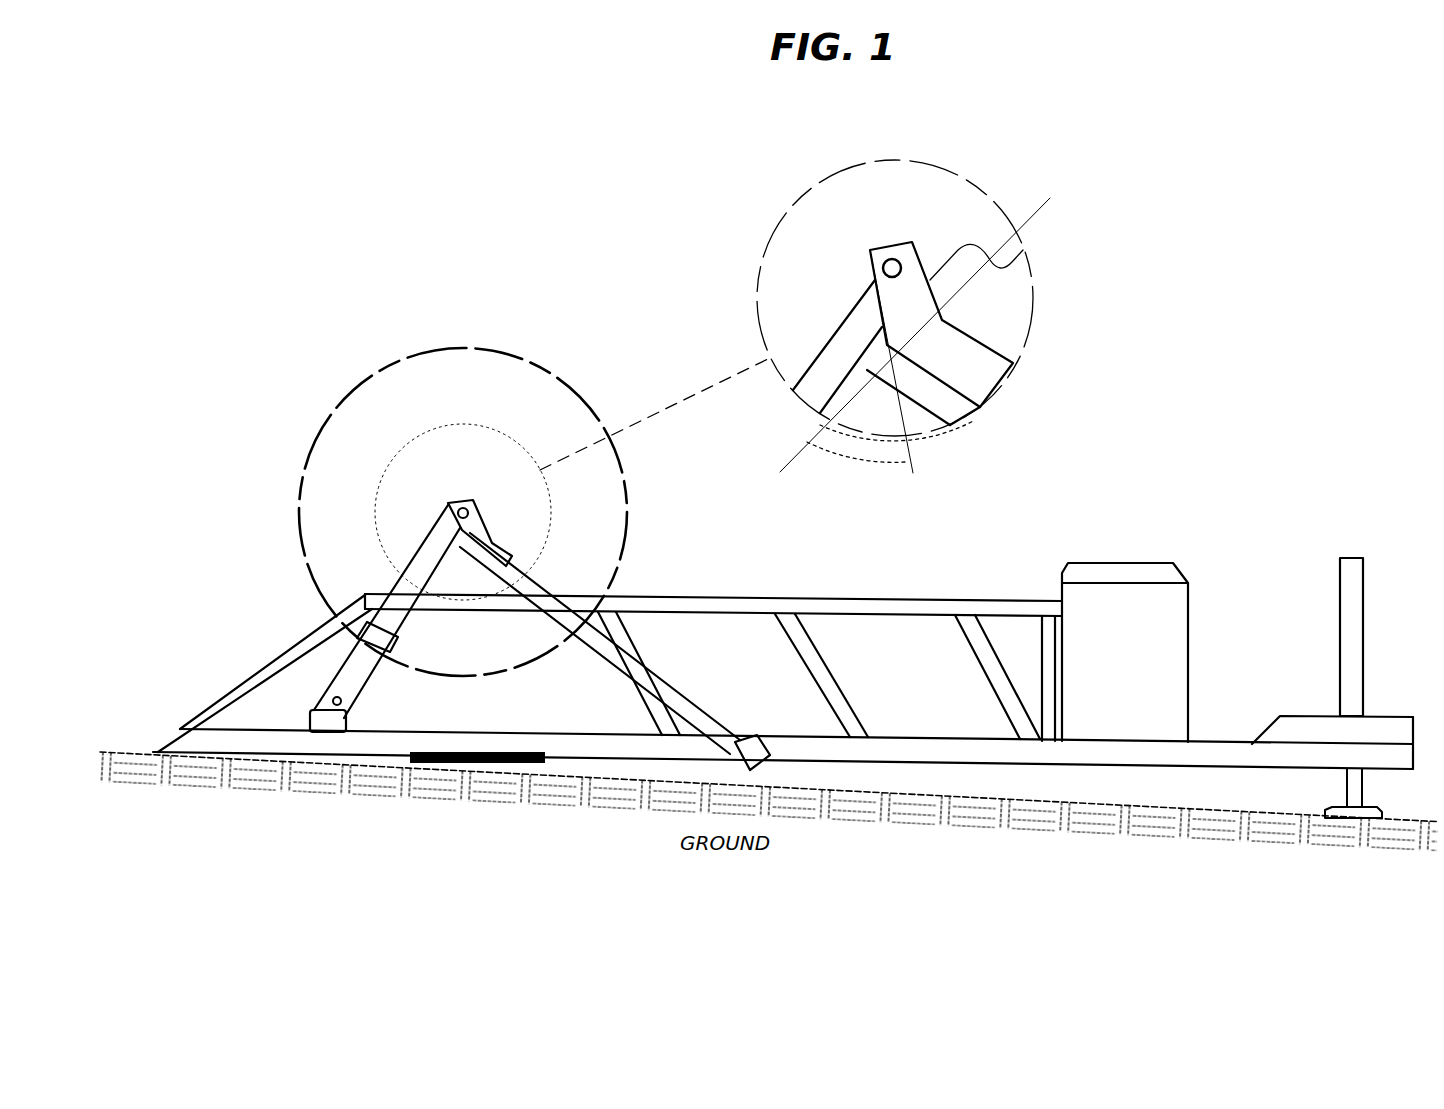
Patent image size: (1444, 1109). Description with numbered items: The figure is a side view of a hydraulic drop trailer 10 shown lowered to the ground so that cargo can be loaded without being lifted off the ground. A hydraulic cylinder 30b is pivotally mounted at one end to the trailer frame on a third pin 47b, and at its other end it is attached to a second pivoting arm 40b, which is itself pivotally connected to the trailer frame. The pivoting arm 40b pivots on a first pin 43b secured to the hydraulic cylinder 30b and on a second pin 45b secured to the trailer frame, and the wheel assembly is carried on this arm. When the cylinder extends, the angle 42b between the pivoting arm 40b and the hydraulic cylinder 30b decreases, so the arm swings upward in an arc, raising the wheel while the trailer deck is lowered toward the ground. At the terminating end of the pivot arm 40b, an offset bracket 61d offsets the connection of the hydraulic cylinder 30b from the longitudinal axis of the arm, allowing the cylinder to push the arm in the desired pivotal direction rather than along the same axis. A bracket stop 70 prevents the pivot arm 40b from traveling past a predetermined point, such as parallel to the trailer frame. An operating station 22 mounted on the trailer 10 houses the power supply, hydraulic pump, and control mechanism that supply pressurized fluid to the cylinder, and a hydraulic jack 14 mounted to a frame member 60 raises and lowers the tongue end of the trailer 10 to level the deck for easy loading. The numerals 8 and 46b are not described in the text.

The irrigation system 8 is at (1179, 374).
The hydraulic drop trailer 10 is at (709, 596).
The hydraulic jack 14 is at (1345, 556).
The operating station 22 is at (1110, 562).
The hydraulic cylinder 30b is at (318, 652).
The second pivoting arm 40b is at (667, 685).
The angle 42b is at (815, 448).
The first pin 43b is at (872, 248).
The second pin 45b is at (746, 749).
The wheel 46b is at (300, 478).
The third pin 47b is at (354, 701).
The frame member 60 is at (1300, 712).
The offset bracket 61d is at (923, 323).
The bracket stop 70 is at (482, 768).